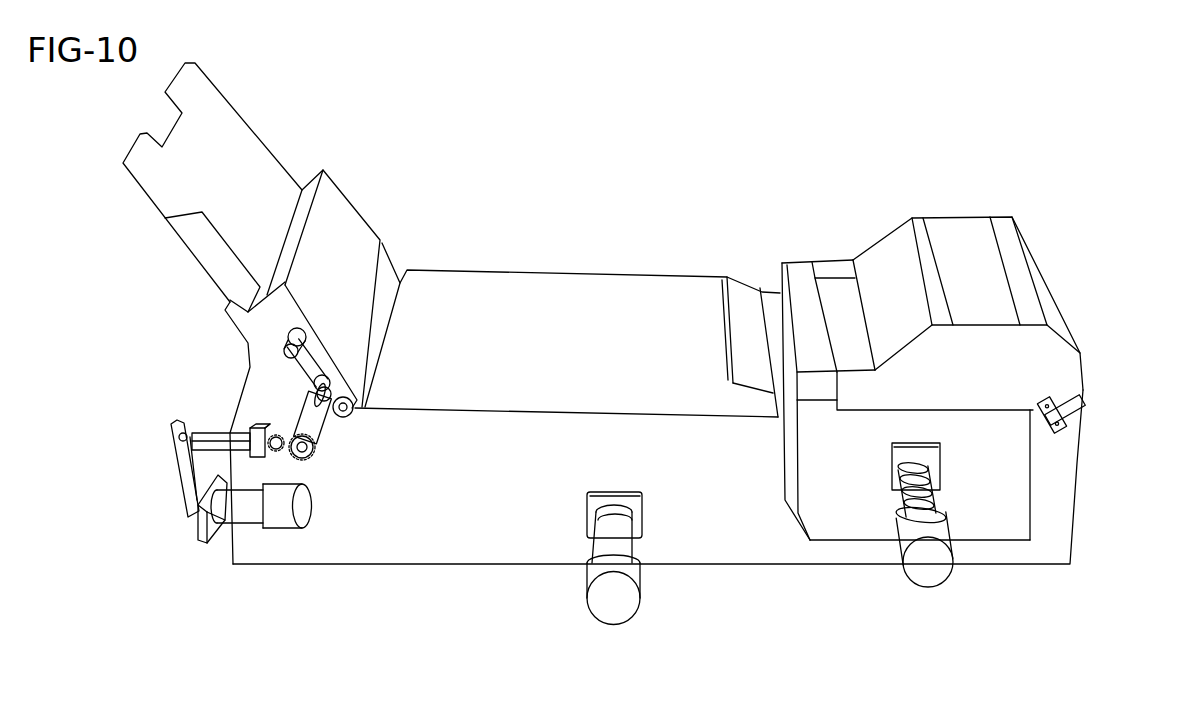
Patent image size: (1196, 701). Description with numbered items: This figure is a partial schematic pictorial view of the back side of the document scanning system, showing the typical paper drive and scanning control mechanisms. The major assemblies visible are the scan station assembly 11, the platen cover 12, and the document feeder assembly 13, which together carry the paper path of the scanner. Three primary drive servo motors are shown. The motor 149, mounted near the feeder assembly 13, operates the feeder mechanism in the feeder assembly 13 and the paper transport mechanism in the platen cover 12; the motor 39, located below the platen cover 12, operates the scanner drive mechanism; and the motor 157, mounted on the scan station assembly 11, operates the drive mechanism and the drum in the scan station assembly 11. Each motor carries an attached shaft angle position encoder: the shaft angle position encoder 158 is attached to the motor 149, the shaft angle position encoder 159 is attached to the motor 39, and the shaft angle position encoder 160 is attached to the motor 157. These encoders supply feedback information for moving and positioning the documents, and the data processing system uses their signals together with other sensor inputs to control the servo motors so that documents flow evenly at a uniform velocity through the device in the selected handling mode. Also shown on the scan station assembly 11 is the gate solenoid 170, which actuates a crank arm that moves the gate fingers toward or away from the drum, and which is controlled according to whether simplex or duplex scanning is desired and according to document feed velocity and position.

The scan station assembly 11 is at (828, 222).
The platen cover 12 is at (593, 240).
The document feeder assembly 13 is at (272, 131).
The motor 39 is at (603, 547).
The motor 149 is at (233, 523).
The motor 157 is at (900, 507).
The shaft angle position encoder 158 is at (308, 508).
The shaft angle position encoder 159 is at (627, 608).
The shaft angle position encoder 160 is at (937, 573).
The gate solenoid 170 is at (1088, 398).